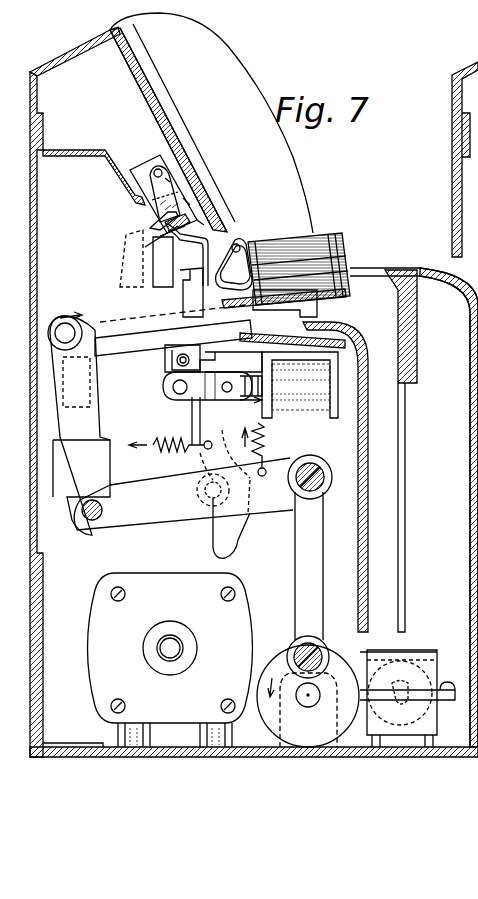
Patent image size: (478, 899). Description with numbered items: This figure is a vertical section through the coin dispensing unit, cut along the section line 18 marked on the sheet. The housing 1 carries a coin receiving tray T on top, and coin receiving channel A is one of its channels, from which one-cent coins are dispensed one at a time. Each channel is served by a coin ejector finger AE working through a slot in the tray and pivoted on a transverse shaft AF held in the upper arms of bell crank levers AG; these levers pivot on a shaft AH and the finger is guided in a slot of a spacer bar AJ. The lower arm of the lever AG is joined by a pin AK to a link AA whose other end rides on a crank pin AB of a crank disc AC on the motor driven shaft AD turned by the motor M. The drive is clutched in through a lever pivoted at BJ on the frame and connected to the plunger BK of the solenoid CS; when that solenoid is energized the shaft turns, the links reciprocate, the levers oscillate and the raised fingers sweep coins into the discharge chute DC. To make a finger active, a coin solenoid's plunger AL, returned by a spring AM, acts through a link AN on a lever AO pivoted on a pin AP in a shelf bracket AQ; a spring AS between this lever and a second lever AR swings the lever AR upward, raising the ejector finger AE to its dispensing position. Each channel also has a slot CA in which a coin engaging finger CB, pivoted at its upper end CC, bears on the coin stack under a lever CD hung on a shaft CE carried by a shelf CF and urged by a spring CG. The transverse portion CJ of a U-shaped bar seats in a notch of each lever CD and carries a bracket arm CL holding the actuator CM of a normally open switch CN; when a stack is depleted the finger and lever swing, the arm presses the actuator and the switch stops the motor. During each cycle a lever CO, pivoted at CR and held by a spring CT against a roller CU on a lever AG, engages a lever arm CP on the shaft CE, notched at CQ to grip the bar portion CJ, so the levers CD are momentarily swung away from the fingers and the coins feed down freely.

The section line 18 is at (38, 72).
The housing 1 is at (30, 238).
The coin receiving tray T is at (240, 72).
The discharge chute DC is at (396, 414).
The shelf CF is at (100, 150).
The normally open switch CN is at (150, 167).
The transversely extending shaft CE is at (163, 175).
The spring CG is at (185, 200).
The transverse portion of U-shaped bar CJ is at (200, 220).
The actuator CM is at (163, 220).
The notch CQ is at (160, 234).
The apertured bracket arm CL is at (162, 245).
The lever CD is at (180, 270).
The lever arm CP is at (165, 283).
The slot CA is at (244, 240).
The upper end pivot of finger CC is at (246, 250).
The coin engaging finger CB is at (250, 250).
The second lever AR is at (257, 332).
The shelf bracket AQ is at (305, 343).
The coin ejector finger AE is at (104, 332).
The transversely disposed shaft AF is at (64, 323).
The spacer bar AJ is at (52, 370).
The pivot shaft AH is at (92, 522).
The bell crank lever AG is at (148, 518).
The roller CU is at (200, 492).
The spring CT is at (178, 449).
The lever CO is at (208, 428).
The link AN is at (195, 398).
The pivot CR is at (168, 378).
The coin receiving channel A is at (170, 350).
The pin AP is at (175, 360).
The lever AO is at (172, 368).
The spring AS is at (233, 362).
The plunger AL is at (251, 383).
The spring AM is at (255, 396).
The pin AK is at (332, 498).
The link AA is at (295, 548).
The crank pin AB is at (318, 656).
The crank disc AC is at (275, 718).
The motor driven shaft AD is at (304, 699).
The motor M is at (176, 609).
The plunger BK is at (407, 698).
The solenoid CS is at (420, 660).
The pivot BJ is at (447, 684).